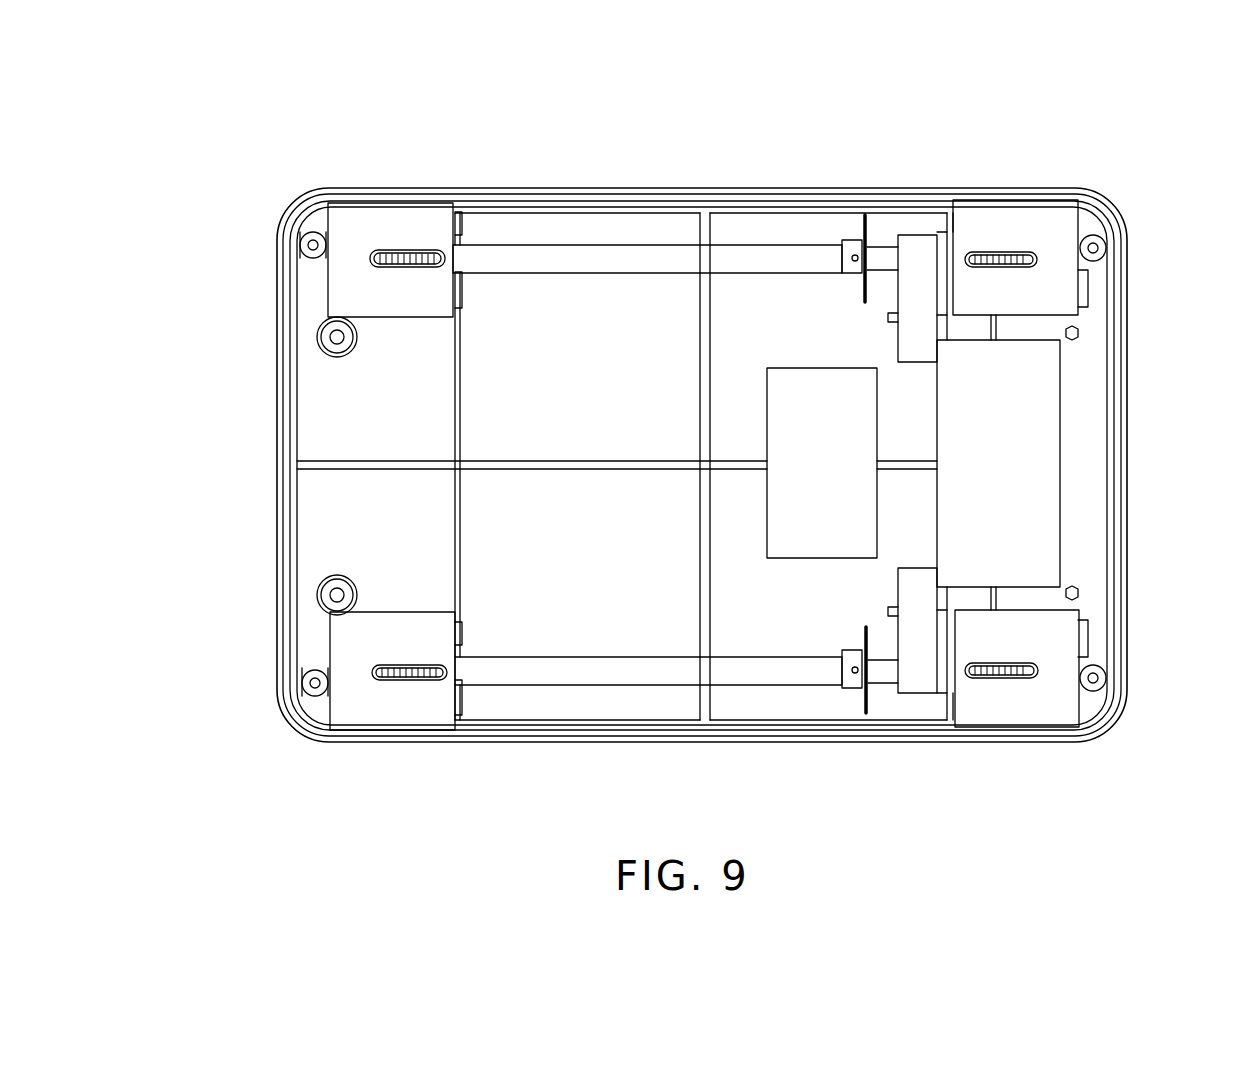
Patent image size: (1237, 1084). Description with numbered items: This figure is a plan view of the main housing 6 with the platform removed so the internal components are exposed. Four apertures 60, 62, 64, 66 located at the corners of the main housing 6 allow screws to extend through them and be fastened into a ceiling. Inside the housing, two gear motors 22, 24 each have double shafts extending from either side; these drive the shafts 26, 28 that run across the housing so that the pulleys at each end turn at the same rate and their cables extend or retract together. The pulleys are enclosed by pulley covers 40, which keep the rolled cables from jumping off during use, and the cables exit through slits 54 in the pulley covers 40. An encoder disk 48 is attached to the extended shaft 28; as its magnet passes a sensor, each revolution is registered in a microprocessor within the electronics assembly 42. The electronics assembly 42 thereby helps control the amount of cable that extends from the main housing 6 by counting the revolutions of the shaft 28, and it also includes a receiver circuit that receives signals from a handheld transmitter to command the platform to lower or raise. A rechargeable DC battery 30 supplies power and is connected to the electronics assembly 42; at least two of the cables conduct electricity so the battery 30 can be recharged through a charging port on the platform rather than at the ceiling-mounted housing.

The main housing 6 is at (1132, 550).
The gear motor 22 is at (910, 262).
The gear motor 24 is at (920, 680).
The shaft 26 is at (598, 262).
The extended shaft 28 is at (612, 673).
The battery power supply 30 is at (840, 447).
The pulley cover 40 is at (412, 712).
The electronics assembly 42 is at (1020, 462).
The encoder disk 48 is at (868, 708).
The slit 54 is at (378, 677).
The aperture 60 is at (1098, 243).
The aperture 62 is at (1100, 676).
The aperture 64 is at (290, 703).
The aperture 66 is at (308, 235).